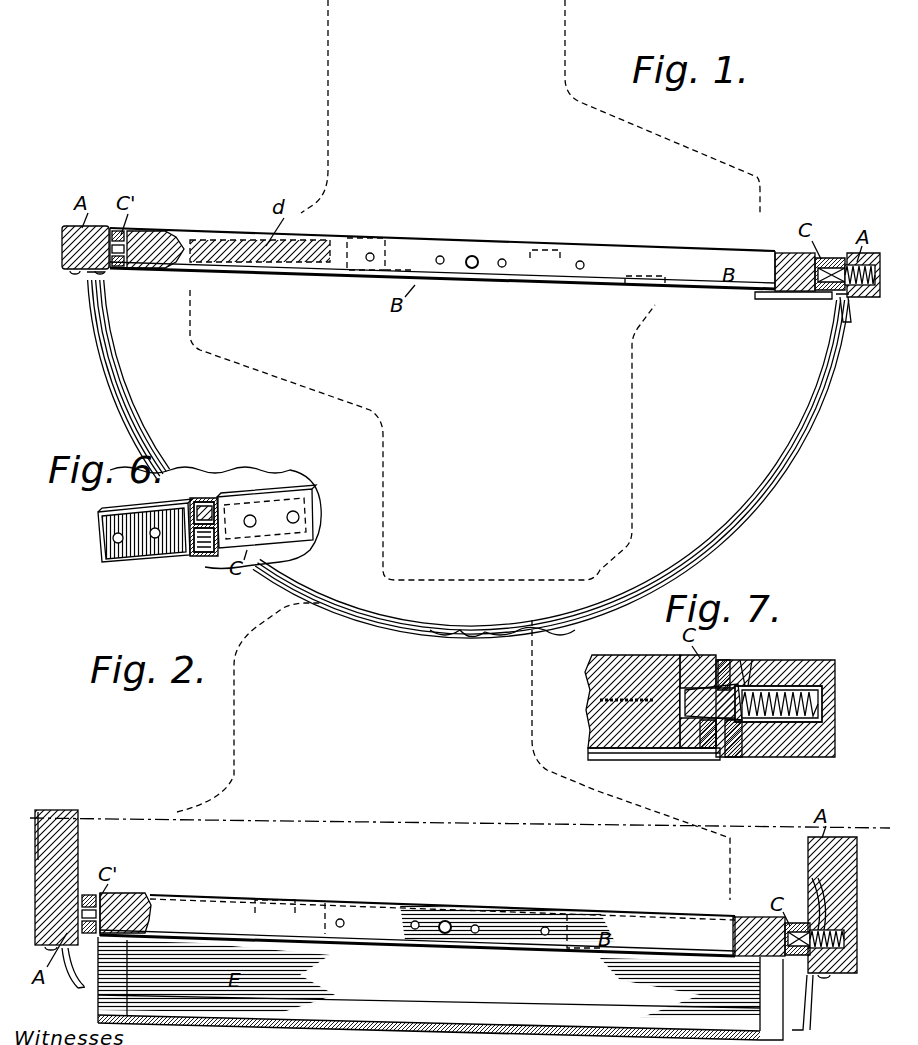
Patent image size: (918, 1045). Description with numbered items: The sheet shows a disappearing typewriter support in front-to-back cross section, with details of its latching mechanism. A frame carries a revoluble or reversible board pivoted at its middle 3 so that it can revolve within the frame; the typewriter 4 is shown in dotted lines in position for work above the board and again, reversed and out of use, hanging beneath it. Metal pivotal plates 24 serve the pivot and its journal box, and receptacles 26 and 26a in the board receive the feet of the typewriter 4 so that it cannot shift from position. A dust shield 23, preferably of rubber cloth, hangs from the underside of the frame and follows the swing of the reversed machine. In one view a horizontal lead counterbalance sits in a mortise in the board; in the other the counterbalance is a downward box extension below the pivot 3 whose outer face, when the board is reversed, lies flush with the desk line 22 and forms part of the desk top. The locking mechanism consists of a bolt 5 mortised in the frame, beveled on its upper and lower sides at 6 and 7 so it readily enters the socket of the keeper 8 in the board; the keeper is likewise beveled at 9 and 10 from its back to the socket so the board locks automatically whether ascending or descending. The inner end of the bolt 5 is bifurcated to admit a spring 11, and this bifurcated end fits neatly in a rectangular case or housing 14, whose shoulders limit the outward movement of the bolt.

In FIG. 1, the pivot 3 is at (475, 257).
In FIG. 2, the pivot 3 is at (447, 921).
In FIG. 1, the typewriter 4 is at (475, 290).
In FIG. 2, the typewriter 4 is at (453, 751).
In FIG. 1, the bolt 5 is at (841, 263).
In FIG. 7, the bolt 5 is at (740, 760).
In FIG. 2, the bolt 5 is at (810, 928).
In FIG. 7, the upper bevel of bolt 6 is at (680, 666).
In FIG. 7, the lower bevel of bolt 7 is at (660, 760).
In FIG. 6, the keeper 8 is at (222, 504).
In FIG. 7, the keeper 8 is at (685, 694).
In FIG. 6, the upper bevel of keeper 9 is at (206, 501).
In FIG. 7, the upper bevel of keeper 9 is at (719, 670).
In FIG. 6, the lower bevel of keeper 10 is at (208, 540).
In FIG. 7, the lower bevel of keeper 10 is at (707, 760).
In FIG. 7, the spring 11 is at (790, 682).
In FIG. 2, the spring 11 is at (836, 976).
In FIG. 7, the case or housing 14 is at (808, 732).
In FIG. 2, the desk line 22 is at (460, 840).
In FIG. 1, the dust shield 23 is at (124, 399).
In FIG. 2, the dust shield 23 is at (84, 988).
In FIG. 1, the pivotal plate 24 is at (551, 281).
In FIG. 2, the pivotal plate 24 is at (548, 949).
In FIG. 1, the receptacle 26 is at (560, 253).
In FIG. 2, the receptacle 26 is at (505, 922).
In FIG. 1, the receptacle 26a is at (318, 250).
In FIG. 2, the receptacle 26a is at (300, 890).